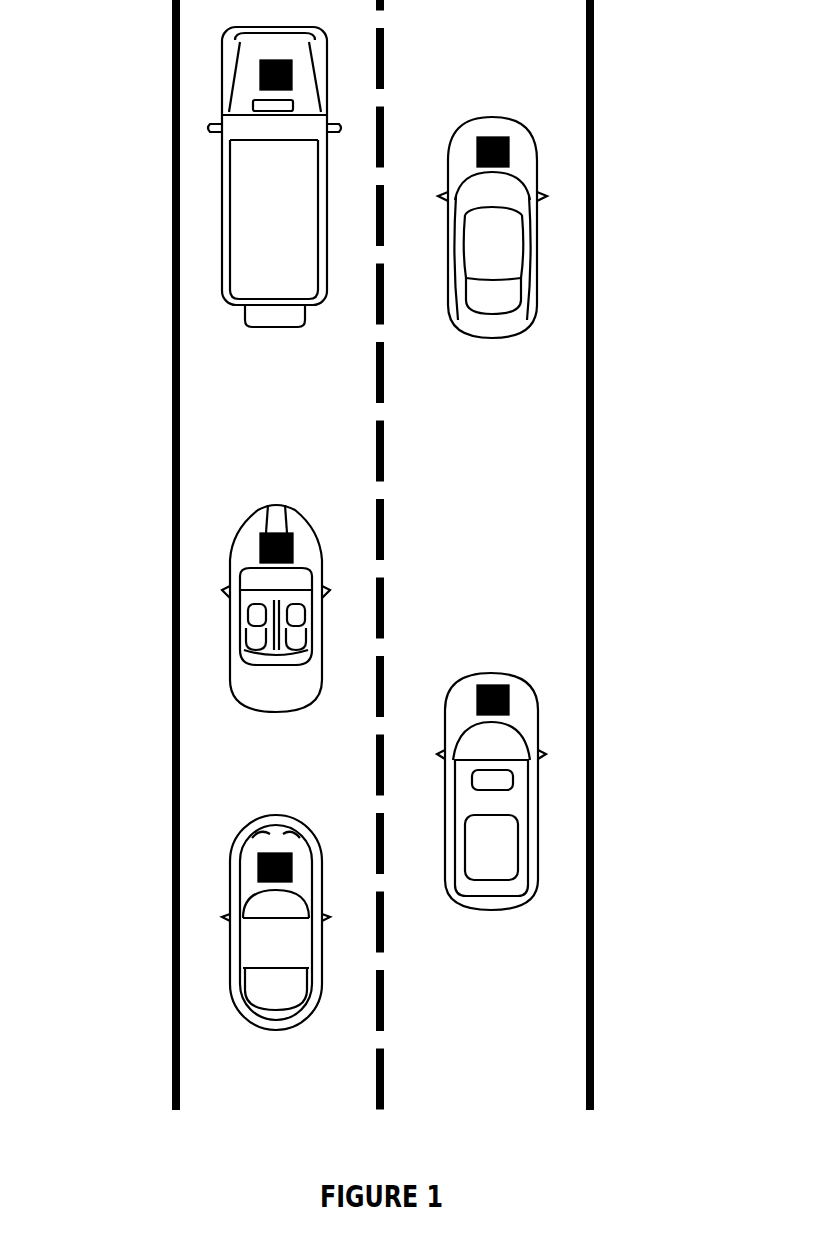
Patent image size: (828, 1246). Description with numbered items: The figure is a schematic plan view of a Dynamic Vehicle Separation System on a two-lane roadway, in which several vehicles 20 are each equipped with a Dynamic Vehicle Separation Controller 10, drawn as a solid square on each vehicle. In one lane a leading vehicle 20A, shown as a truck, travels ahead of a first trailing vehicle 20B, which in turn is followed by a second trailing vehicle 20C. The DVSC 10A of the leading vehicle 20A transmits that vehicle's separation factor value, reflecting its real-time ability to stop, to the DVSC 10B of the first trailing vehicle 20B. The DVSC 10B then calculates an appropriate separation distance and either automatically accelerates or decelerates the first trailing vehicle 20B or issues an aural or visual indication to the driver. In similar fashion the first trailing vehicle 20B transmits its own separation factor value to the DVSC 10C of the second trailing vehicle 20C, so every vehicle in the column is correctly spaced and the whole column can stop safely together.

The Dynamic Vehicle Separation Controller 10 is at (508, 155).
The vehicle 20 is at (558, 513).
The DVSC of the leading vehicle 10A is at (259, 73).
The leading vehicle 20A is at (203, 177).
The DVSC of the first trailing vehicle 10B is at (259, 548).
The first trailing vehicle 20B is at (197, 608).
The DVSC of the second trailing vehicle 10C is at (258, 868).
The second trailing vehicle 20C is at (197, 922).